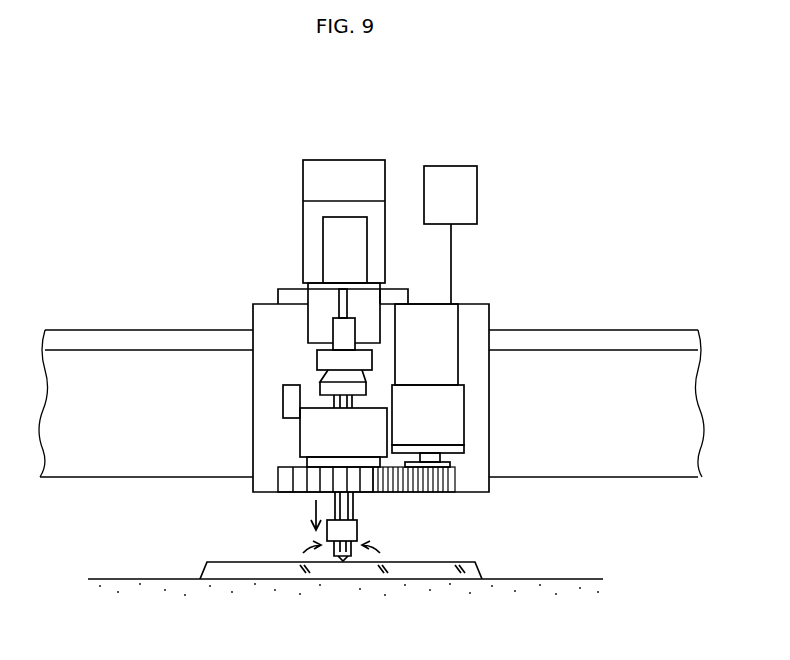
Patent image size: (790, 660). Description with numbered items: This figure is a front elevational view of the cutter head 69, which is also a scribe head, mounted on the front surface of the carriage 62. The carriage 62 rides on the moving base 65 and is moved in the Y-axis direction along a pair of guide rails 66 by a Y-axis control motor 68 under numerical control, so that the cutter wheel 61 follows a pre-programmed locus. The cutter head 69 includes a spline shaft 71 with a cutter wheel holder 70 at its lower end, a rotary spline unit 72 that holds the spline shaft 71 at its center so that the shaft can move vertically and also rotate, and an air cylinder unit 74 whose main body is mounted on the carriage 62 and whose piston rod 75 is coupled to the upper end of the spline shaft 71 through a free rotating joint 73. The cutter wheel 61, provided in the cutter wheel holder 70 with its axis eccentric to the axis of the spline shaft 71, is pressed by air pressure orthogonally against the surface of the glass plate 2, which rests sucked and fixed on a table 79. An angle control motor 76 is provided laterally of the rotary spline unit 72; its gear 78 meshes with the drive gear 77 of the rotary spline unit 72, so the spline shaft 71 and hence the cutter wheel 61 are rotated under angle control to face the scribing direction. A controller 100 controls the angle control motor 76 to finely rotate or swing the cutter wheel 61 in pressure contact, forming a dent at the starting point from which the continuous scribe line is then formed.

The glass plate 2 is at (442, 568).
The cutter wheel 61 is at (345, 561).
The carriage 62 is at (263, 368).
The moving base 65 is at (585, 367).
The guide rails 66 is at (627, 343).
The Y-axis control motor 68 is at (345, 172).
The cutter head 69 is at (322, 312).
The cutter wheel holder 70 is at (344, 530).
The spline shaft 71 is at (345, 507).
The rotary spline unit 72 is at (320, 437).
The free rotating joint 73 is at (363, 357).
The air cylinder unit 74 is at (347, 235).
The piston rod 75 is at (343, 308).
The angle control motor 76 is at (450, 417).
The drive gear 77 is at (308, 480).
The gear 78 is at (455, 472).
The table 79 is at (562, 585).
The controller 100 is at (468, 190).